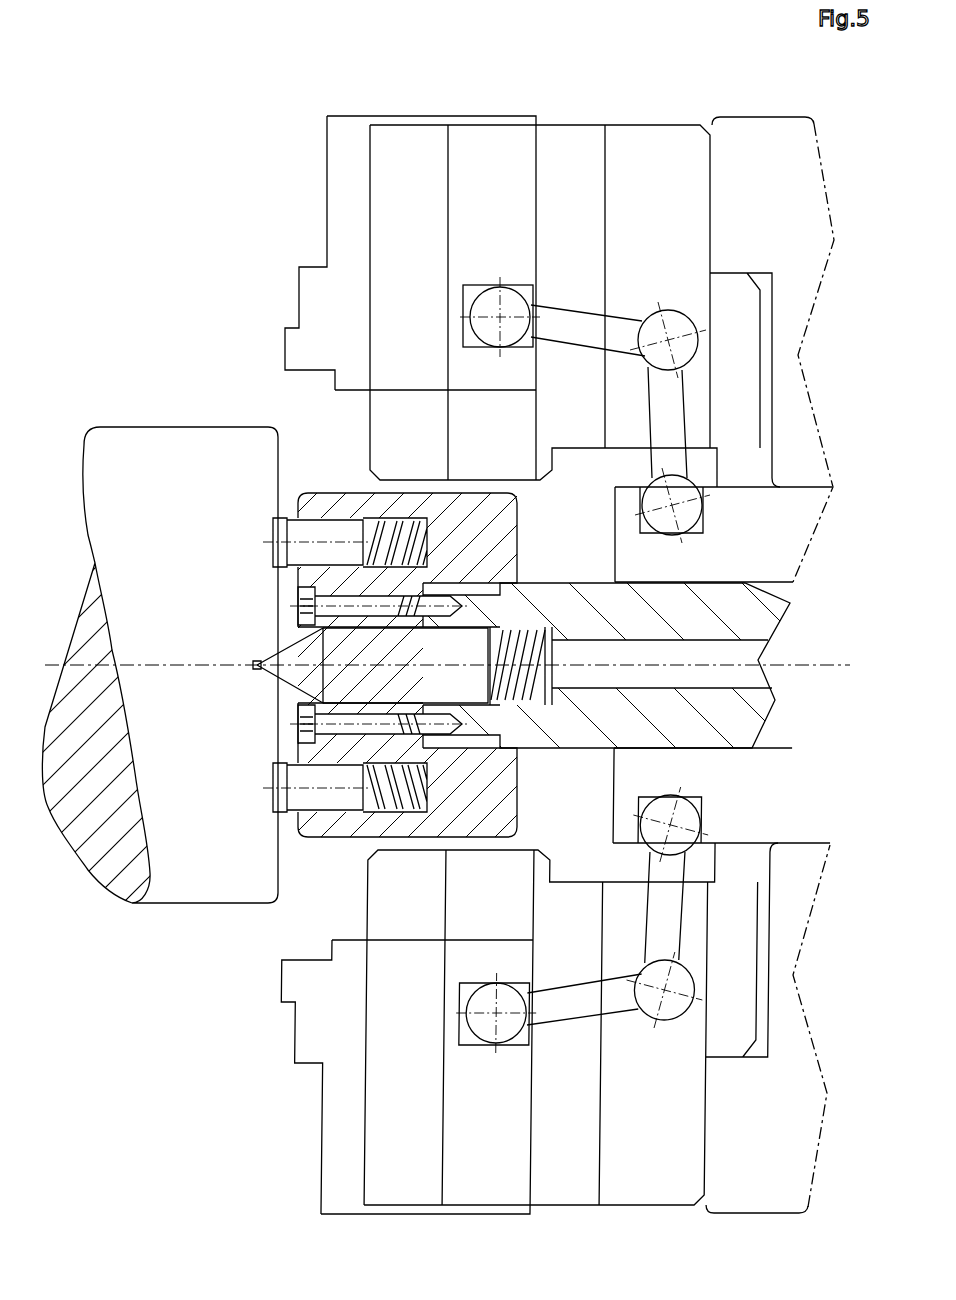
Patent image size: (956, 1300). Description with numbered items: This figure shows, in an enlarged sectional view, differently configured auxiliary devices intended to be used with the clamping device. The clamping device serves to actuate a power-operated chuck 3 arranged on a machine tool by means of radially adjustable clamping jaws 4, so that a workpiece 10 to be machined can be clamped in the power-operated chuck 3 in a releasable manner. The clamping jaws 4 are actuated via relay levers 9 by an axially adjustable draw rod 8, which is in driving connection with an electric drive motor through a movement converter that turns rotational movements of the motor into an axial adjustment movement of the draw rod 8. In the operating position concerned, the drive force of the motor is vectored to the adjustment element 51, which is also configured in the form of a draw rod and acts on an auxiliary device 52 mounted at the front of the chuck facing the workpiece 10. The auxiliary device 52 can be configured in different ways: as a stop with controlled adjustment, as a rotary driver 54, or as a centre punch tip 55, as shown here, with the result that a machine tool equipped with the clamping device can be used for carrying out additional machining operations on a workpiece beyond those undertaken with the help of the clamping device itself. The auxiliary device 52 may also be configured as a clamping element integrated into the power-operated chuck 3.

The power-operated chuck 3 is at (567, 117).
The clamping jaws 4 is at (292, 294).
The draw rod 8 is at (748, 482).
The relay levers 9 is at (620, 310).
The workpiece 10 is at (139, 421).
The adjustment element 51 is at (608, 708).
The auxiliary device 52 is at (328, 862).
The rotary driver 54 is at (289, 824).
The centre punch tip 55 is at (258, 668).